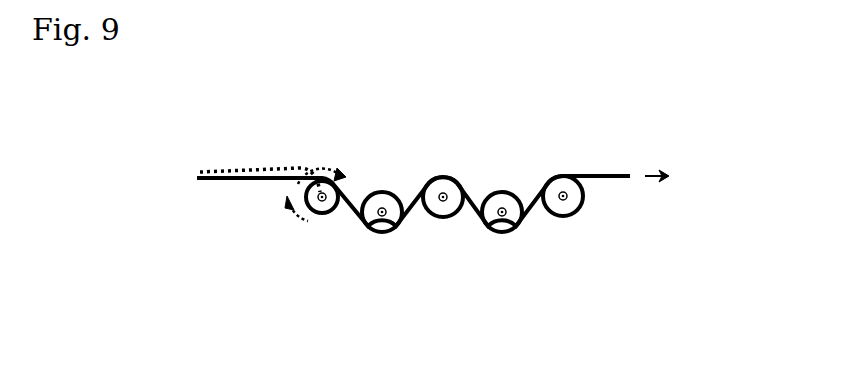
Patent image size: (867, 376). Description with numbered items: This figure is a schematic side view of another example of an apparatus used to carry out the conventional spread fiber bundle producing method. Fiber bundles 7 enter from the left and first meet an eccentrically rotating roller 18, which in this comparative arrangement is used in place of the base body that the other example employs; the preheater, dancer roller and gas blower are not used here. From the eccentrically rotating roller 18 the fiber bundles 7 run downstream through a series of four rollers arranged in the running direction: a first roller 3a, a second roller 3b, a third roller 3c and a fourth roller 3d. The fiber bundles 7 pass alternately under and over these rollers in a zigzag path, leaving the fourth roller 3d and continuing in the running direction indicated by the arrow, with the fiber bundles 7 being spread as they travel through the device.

The fiber bundles 7 is at (238, 180).
The eccentrically rotating roller 18 is at (329, 214).
The first roller 3a is at (377, 191).
The second roller 3b is at (447, 218).
The third roller 3c is at (497, 192).
The fourth roller 3d is at (563, 216).